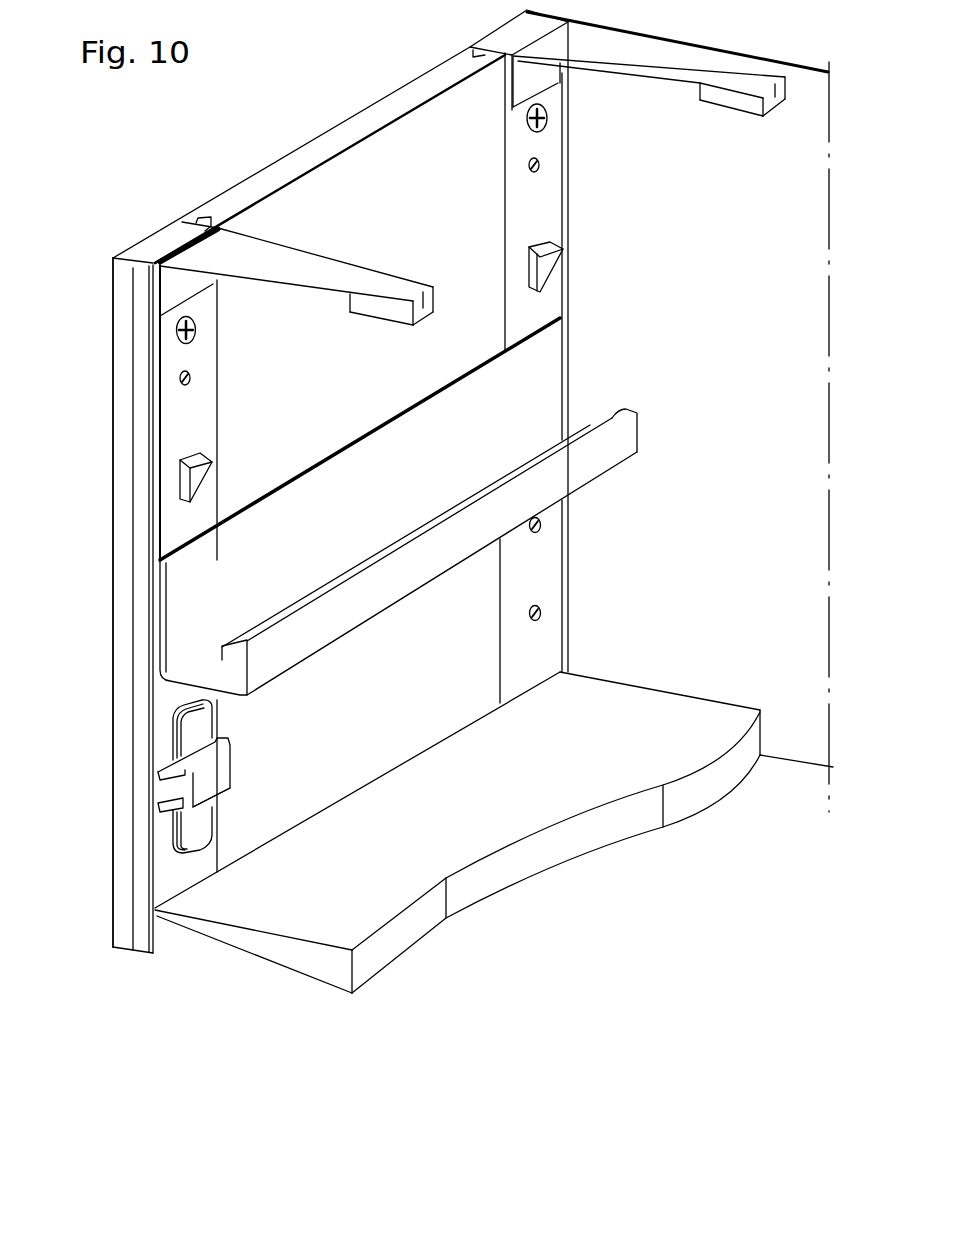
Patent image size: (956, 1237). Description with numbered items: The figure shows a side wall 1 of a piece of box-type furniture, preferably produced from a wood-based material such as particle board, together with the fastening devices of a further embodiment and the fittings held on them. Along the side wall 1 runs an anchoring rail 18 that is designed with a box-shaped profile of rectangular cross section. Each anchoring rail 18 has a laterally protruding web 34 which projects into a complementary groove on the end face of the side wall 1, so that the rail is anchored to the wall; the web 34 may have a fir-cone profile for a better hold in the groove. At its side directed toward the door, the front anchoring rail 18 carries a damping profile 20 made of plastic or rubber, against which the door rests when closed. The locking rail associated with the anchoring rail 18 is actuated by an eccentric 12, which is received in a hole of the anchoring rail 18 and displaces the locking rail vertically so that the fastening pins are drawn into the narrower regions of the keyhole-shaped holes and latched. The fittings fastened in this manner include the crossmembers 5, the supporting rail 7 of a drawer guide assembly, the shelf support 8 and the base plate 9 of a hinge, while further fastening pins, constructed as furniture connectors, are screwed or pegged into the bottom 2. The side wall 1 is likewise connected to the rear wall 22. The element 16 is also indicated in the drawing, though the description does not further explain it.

The side wall 1 is at (318, 120).
The bottom 2 is at (508, 867).
The crossmember 5 is at (233, 253).
The supporting rail 7 is at (443, 550).
The shelf support 8 is at (542, 247).
The base plate 9 is at (197, 832).
The eccentric 12 is at (182, 340).
The hanger tab 16 is at (512, 33).
The anchoring rail 18 is at (160, 232).
The damping profile 20 is at (123, 288).
The rear wall 22 is at (802, 117).
The web 34 is at (203, 226).